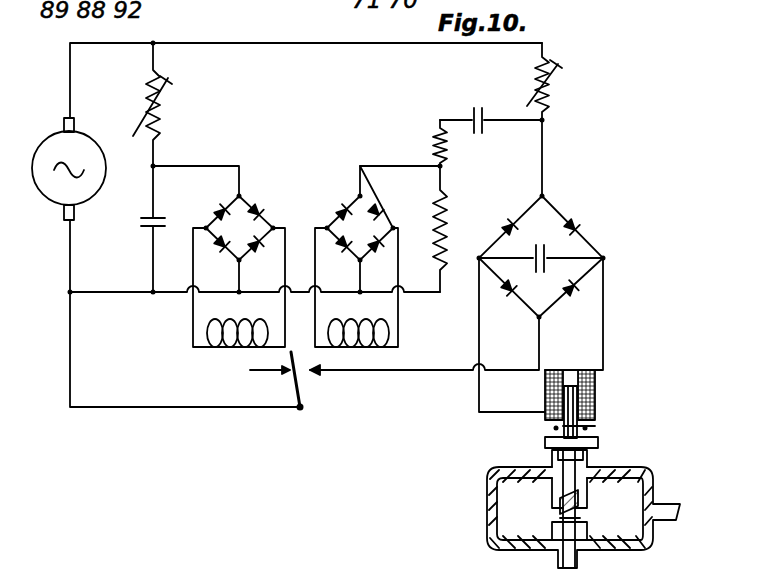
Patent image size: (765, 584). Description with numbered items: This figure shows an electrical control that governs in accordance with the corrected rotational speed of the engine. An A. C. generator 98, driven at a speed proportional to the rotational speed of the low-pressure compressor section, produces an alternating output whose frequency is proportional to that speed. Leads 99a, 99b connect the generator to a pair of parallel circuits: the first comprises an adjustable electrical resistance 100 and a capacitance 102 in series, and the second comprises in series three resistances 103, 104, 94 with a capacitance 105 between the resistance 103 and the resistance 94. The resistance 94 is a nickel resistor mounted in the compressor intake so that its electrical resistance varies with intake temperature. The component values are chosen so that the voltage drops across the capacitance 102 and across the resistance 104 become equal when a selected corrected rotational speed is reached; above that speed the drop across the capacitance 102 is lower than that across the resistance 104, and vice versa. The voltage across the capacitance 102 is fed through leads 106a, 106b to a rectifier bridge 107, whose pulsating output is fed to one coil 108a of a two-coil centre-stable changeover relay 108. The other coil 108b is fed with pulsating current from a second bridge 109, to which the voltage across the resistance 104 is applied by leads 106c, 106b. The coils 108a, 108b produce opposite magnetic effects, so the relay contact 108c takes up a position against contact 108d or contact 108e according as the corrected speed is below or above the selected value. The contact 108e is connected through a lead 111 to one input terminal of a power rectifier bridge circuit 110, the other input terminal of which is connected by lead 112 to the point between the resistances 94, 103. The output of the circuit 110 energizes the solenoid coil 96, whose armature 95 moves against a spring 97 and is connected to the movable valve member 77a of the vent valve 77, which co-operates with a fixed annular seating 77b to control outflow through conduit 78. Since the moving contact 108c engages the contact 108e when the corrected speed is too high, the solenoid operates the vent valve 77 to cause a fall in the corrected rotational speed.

The A. C. generator 98 is at (56, 212).
The lead 99a is at (72, 72).
The lead 99b is at (72, 272).
The adjustable electrical resistance 100 is at (140, 95).
The capacitance 102 is at (142, 222).
The resistance 103 is at (553, 92).
The resistance 104 is at (447, 219).
The capacitance 105 is at (472, 110).
The lead 106a is at (186, 166).
The lead 106b is at (167, 295).
The lead 106c is at (400, 166).
The rectifier bridge 107 is at (249, 208).
The second bridge 109 is at (361, 212).
The power rectifier bridge circuit 110 is at (546, 308).
The two-coil centre-stable changeover relay 108 is at (236, 355).
The coil 108a is at (222, 351).
The coil 108b is at (385, 328).
The relay contact 108c is at (303, 386).
The contact 108d is at (291, 376).
The contact 108e is at (314, 375).
The lead 111 is at (440, 372).
The lead 112 is at (545, 152).
The resistance 94 is at (437, 128).
The armature 95 is at (597, 394).
The solenoid coil 96 is at (596, 416).
The spring 97 is at (553, 428).
The vent valve 77 is at (548, 500).
The movable valve member 77a is at (546, 520).
The fixed annular seating 77b is at (552, 520).
The conduit 78 is at (560, 562).